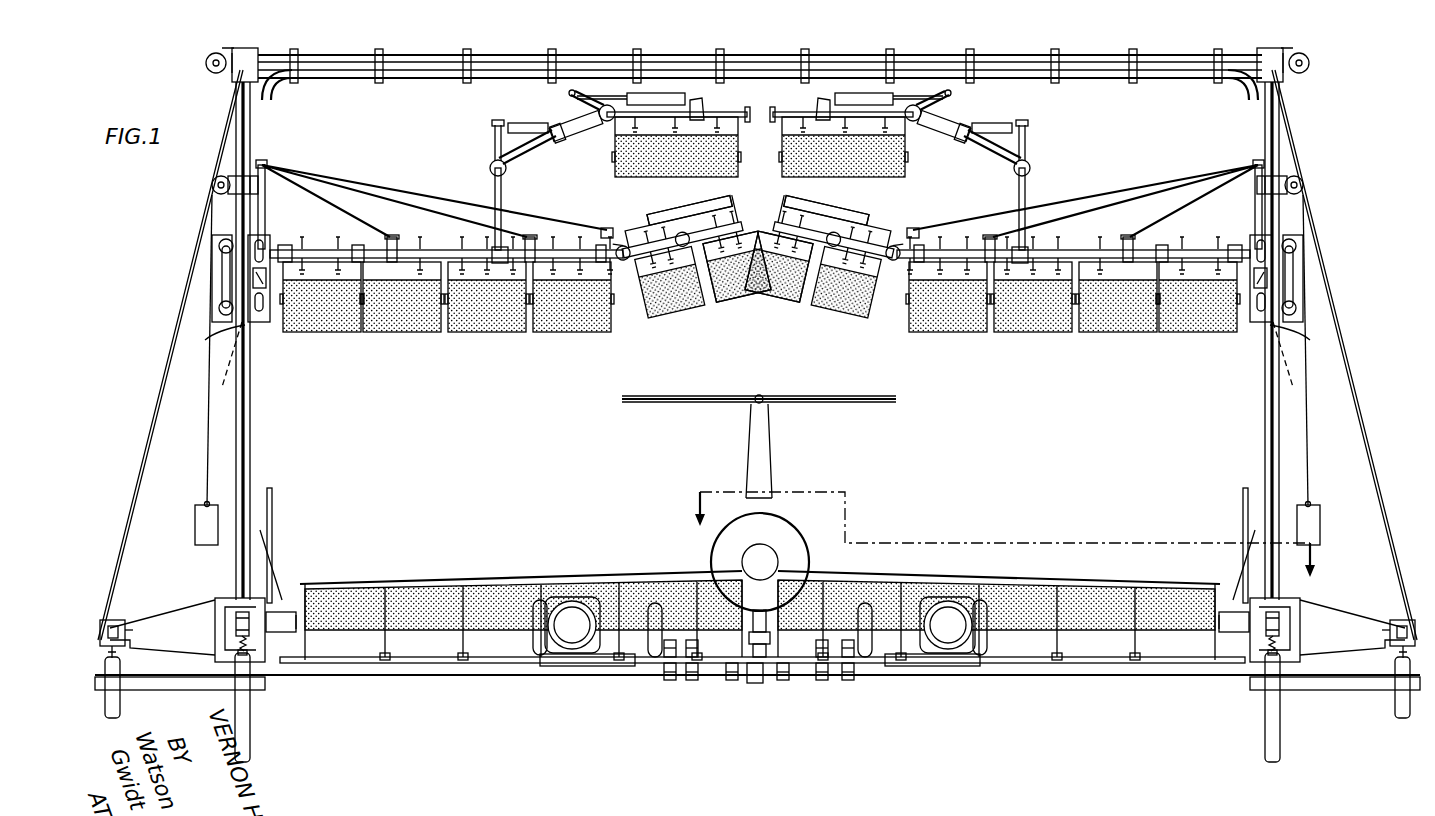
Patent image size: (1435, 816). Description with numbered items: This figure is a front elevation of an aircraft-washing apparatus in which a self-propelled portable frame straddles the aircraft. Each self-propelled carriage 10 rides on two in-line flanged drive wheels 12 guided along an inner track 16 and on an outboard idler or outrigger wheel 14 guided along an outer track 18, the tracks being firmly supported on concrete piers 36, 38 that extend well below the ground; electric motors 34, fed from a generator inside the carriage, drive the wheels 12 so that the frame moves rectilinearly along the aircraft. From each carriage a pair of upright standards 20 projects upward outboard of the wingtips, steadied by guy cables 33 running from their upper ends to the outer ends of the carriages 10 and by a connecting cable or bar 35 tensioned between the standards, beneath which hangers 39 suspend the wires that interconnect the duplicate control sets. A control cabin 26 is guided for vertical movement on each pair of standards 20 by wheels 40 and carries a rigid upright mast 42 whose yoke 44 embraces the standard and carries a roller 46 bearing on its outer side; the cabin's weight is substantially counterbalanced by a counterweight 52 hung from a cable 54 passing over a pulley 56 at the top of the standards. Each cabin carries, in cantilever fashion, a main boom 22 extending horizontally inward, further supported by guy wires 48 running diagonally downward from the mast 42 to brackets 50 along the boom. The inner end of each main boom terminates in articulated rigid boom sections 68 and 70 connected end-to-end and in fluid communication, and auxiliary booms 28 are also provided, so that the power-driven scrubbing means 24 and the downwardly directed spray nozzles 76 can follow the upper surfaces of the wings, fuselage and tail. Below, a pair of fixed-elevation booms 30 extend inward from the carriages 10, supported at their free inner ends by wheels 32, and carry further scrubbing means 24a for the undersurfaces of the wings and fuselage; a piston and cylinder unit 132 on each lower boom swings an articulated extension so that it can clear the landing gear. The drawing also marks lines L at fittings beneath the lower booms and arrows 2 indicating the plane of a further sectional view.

The self-propelled carriage 10 is at (202, 589).
The flanged drive wheel 12 is at (235, 620).
The outrigger wheel 14 is at (113, 620).
The inner track 16 is at (233, 640).
The outer track 18 is at (117, 650).
The upright standard 20 is at (248, 455).
The main boom 22 is at (432, 241).
The power-driven scrubbing means 24 is at (328, 332).
The power-driven scrubbing means 24a is at (452, 591).
The control cabin 26 is at (212, 273).
The auxiliary boom 28 is at (986, 168).
The fixed elevation boom 30 is at (514, 673).
The wheel 32 is at (728, 680).
The guy cable 33 is at (150, 388).
The electric motor 34 is at (288, 595).
The connecting cable 35 is at (530, 57).
The concrete pier 36 is at (118, 700).
The concrete pier 38 is at (250, 710).
The hanger 39 is at (450, 54).
The cabin wheel 40 is at (216, 214).
The upright mast 42 is at (260, 225).
The yoke 44 is at (226, 168).
The roller 46 is at (214, 198).
The guy wire 48 is at (338, 182).
The bracket 50 is at (406, 236).
The counterweight 52 is at (194, 524).
The cable 54 is at (206, 465).
The pulley 56 is at (208, 59).
The rigid boom section 68 is at (662, 236).
The rigid boom section 70 is at (708, 254).
The spray discharge nozzle 76 is at (1036, 232).
The piston and cylinder unit 132 is at (590, 668).
The supply line L is at (672, 674).
The section line 2- 2 is at (1006, 537).